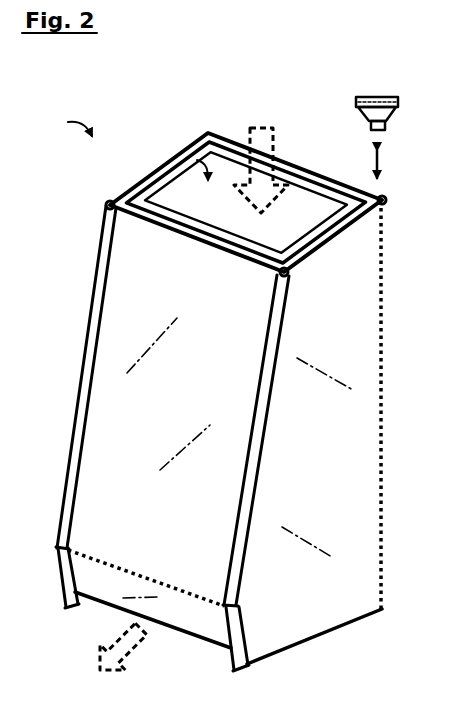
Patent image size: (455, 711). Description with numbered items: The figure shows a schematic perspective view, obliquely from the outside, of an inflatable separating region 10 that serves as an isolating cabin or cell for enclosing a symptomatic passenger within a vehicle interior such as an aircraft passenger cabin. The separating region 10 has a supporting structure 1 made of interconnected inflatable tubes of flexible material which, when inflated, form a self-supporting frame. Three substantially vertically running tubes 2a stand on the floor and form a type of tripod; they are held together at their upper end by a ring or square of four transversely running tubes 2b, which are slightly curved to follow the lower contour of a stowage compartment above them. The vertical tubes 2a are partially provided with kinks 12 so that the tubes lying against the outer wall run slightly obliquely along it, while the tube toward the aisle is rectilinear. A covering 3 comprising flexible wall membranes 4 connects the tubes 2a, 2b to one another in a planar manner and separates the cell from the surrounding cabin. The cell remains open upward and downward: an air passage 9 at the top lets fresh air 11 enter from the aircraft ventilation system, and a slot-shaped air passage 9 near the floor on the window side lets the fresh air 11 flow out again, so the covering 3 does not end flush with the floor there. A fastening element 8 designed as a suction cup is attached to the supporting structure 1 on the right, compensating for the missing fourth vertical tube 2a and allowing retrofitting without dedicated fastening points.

The supporting structure 1 is at (52, 498).
The vertically running tubes 2a is at (88, 345).
The transversely running tubes 2b is at (299, 163).
The covering 3 is at (350, 346).
The wall membranes 4 is at (107, 433).
The fastening element 8 is at (366, 97).
The air passage 9 is at (188, 149).
The separating region 10 is at (63, 122).
The fresh air 11 is at (272, 128).
The kinks 12 is at (388, 284).